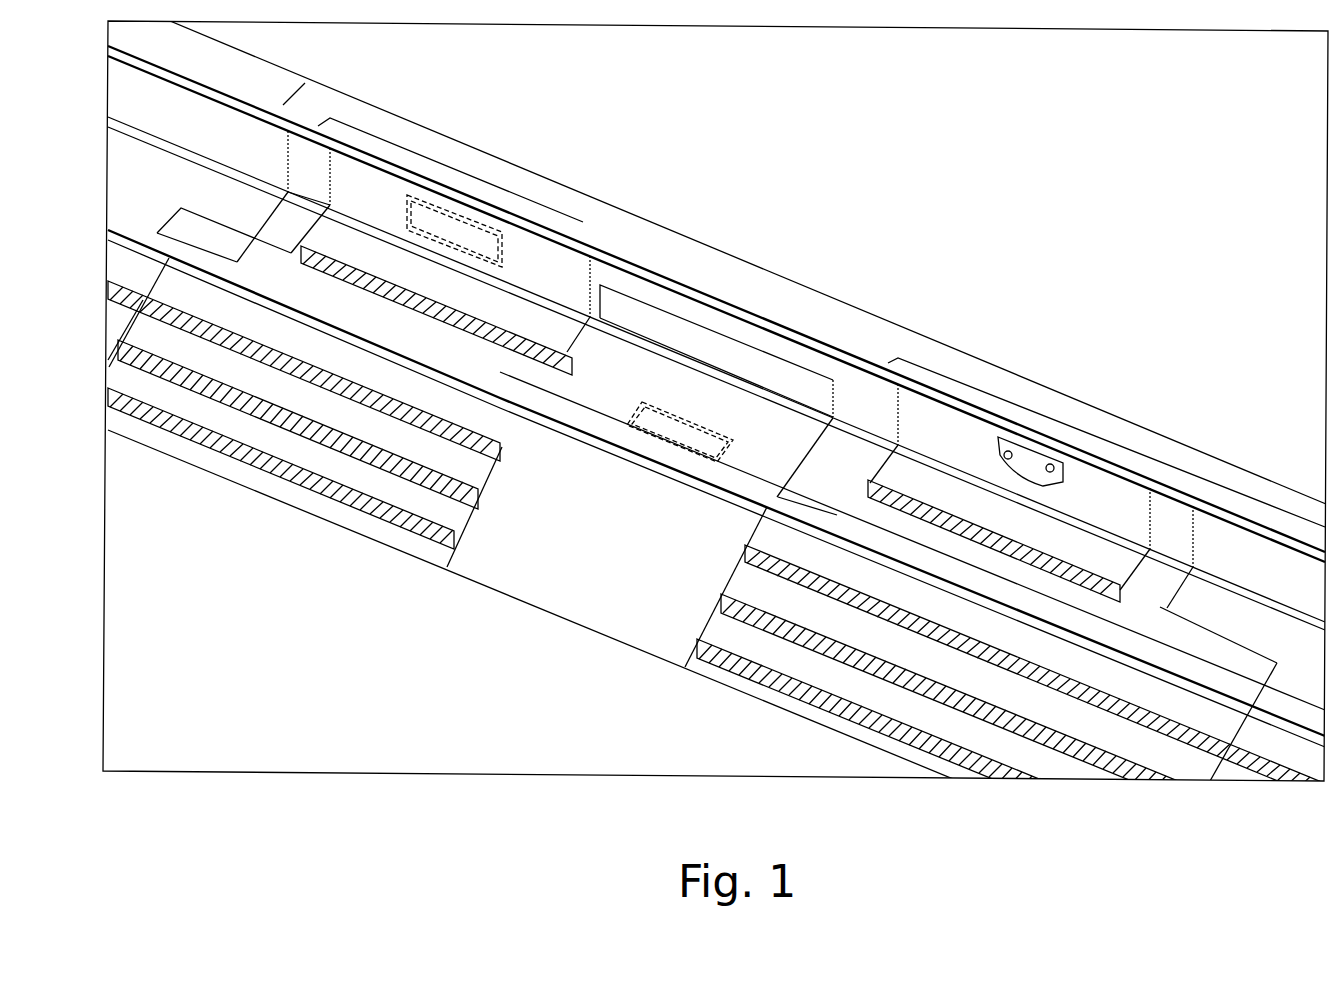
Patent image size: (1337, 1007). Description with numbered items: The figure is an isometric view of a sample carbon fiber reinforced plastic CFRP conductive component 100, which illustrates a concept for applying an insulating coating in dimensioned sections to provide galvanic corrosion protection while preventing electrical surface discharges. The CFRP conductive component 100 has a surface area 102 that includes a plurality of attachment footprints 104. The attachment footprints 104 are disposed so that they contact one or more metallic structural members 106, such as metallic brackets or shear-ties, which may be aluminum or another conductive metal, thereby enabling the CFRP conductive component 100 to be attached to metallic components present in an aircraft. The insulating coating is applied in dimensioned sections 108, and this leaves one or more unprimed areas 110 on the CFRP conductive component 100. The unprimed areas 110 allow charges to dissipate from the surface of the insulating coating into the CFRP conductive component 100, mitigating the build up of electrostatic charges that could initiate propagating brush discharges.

The CFRP conductive component 100 is at (445, 98).
The surface area 102 is at (1221, 548).
The attachment footprints 104 is at (452, 210).
The metallic structural members 106 is at (560, 352).
The dimensioned sections 108 is at (733, 578).
The unprimed areas 110 is at (505, 447).